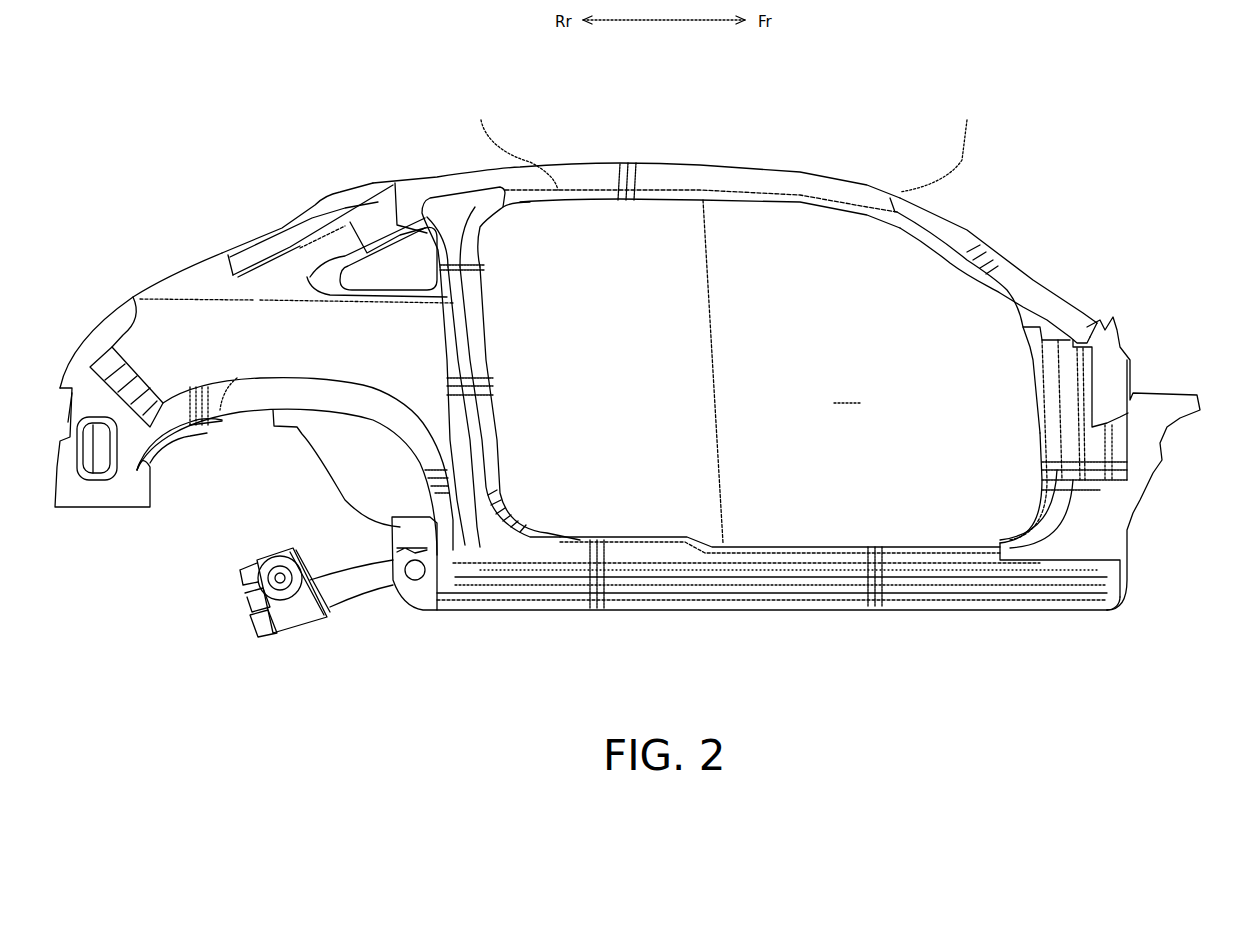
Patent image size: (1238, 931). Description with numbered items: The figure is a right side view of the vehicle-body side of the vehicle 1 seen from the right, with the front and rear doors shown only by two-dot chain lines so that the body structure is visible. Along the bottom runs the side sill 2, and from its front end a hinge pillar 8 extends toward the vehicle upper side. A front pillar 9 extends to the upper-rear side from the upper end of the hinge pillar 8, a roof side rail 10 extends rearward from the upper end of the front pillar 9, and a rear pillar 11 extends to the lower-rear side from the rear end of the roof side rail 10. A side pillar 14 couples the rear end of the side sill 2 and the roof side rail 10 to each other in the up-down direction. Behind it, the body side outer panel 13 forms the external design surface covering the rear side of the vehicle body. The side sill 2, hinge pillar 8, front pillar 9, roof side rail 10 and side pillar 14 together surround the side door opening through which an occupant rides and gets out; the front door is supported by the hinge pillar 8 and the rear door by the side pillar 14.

The vehicle 1 is at (225, 85).
The side sill 2 is at (810, 607).
The hinge pillar 8 is at (1077, 550).
The front pillar 9 is at (964, 241).
The roof side rail 10 is at (717, 173).
The rear pillar 11 is at (292, 237).
The body side outer panel 13 is at (262, 347).
The side pillar 14 is at (490, 338).